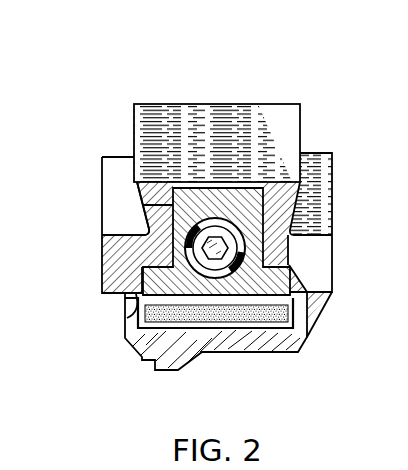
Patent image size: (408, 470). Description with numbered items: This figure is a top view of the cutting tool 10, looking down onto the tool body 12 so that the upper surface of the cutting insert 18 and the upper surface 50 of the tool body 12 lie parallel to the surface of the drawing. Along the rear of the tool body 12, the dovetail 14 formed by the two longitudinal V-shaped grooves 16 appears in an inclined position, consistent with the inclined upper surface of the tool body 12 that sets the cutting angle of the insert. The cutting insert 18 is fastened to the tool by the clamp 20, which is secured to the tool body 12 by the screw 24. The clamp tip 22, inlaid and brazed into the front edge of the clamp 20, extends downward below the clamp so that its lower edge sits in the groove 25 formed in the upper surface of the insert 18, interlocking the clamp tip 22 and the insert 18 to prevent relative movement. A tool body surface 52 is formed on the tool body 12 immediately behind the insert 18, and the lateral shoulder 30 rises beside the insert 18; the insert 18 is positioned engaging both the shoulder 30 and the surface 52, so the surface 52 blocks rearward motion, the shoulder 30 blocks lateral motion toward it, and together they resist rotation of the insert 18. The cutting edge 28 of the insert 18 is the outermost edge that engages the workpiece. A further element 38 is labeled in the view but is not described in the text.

The cutting tool 10 is at (143, 83).
The tool body 12 is at (102, 222).
The dovetail 14 is at (204, 117).
The longitudinal V-shaped grooves 16 is at (120, 190).
The cutting insert 18 is at (148, 339).
The clamp 20 is at (236, 202).
The clamp tip 22 is at (178, 310).
The screw 24 is at (245, 236).
The groove 25 is at (251, 332).
The cutting edge 28 is at (190, 363).
The lateral shoulder 30 is at (320, 303).
The support member 38 is at (390, 5).
The upper surface 50 is at (310, 256).
The tool body surface 52 is at (127, 320).